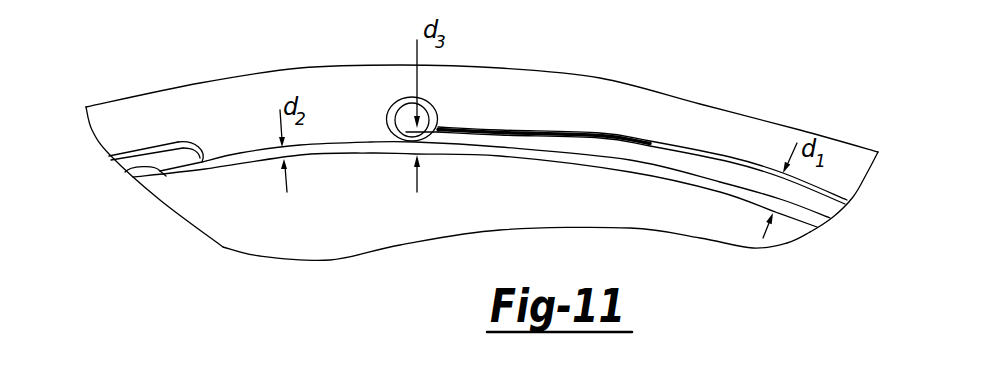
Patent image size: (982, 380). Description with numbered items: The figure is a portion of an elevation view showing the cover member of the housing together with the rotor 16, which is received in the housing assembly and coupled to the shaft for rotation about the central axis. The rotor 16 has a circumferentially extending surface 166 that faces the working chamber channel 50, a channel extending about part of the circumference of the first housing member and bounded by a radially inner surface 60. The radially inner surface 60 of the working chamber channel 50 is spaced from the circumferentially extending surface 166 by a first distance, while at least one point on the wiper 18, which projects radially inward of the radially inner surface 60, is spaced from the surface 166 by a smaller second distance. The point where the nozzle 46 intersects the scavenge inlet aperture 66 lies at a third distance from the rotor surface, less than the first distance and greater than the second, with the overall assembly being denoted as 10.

The vehicle panel assembly 10 is at (482, 76).
The rotor 16 is at (237, 227).
The wiper 18 is at (215, 97).
The nozzle 46 is at (477, 145).
The working chamber channel 50 is at (642, 123).
The radially inner surface 60 is at (716, 155).
The scavenge inlet aperture 66 is at (395, 102).
The circumferentially extending surface 166 is at (128, 172).